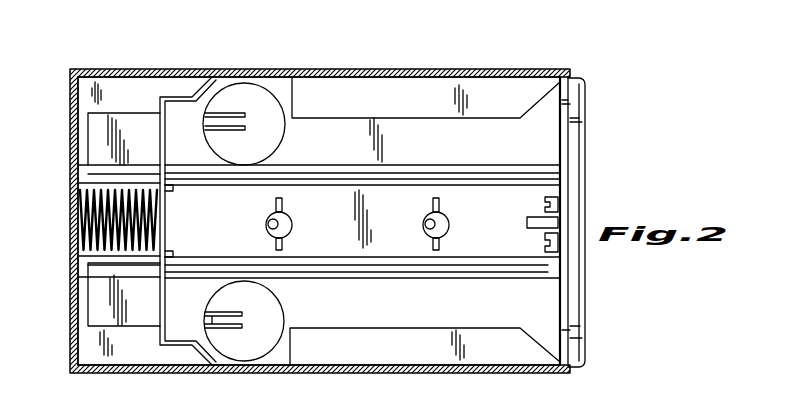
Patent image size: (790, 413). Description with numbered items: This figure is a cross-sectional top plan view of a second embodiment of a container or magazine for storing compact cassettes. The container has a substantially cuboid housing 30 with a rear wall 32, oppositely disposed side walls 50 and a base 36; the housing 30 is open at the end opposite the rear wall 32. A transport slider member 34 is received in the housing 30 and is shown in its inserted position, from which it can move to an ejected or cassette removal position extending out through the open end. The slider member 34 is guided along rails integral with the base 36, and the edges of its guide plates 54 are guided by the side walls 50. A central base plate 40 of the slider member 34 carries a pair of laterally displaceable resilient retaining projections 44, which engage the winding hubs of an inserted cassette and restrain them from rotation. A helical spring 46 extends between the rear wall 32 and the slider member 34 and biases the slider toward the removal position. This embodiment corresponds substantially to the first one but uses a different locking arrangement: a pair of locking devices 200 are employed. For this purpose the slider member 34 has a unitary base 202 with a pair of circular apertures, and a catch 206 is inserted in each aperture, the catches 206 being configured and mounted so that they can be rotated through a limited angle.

The housing 30 is at (86, 68).
The rear wall 32 is at (70, 132).
The transport slider member 34 is at (374, 115).
The base 36 is at (122, 95).
The central base plate 40 is at (409, 232).
The resilient retaining projections 44 is at (290, 232).
The helical spring 46 is at (78, 221).
The side walls 50 is at (418, 73).
The guide plates 54 is at (198, 96).
The locking devices 200 is at (286, 142).
The unitary base 202 is at (436, 151).
The catch 206 is at (248, 95).